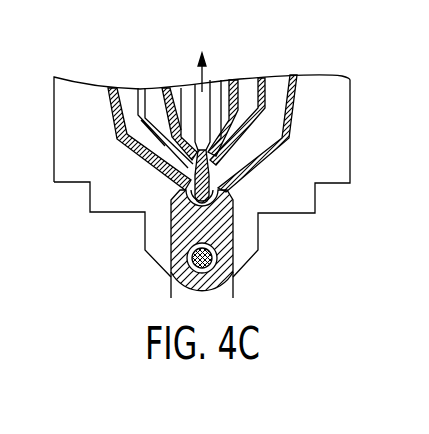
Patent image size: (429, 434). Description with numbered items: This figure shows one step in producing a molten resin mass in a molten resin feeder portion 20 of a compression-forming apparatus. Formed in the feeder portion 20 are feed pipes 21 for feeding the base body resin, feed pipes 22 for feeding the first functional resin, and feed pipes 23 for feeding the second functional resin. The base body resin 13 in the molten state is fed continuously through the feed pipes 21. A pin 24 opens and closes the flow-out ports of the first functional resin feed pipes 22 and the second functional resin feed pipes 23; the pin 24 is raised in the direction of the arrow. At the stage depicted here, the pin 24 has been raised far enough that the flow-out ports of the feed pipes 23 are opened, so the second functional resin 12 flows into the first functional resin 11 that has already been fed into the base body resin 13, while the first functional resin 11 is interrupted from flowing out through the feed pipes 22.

The first functional resin 11 is at (222, 192).
The second functional resin 12 is at (171, 213).
The base body resin 13 is at (228, 262).
The molten resin feeder portion 20 is at (333, 135).
The feed pipes 21 is at (112, 90).
The first functional resin feed pipes 22 is at (140, 90).
The second functional resin feed pipes 23 is at (237, 82).
The pin 24 is at (199, 90).